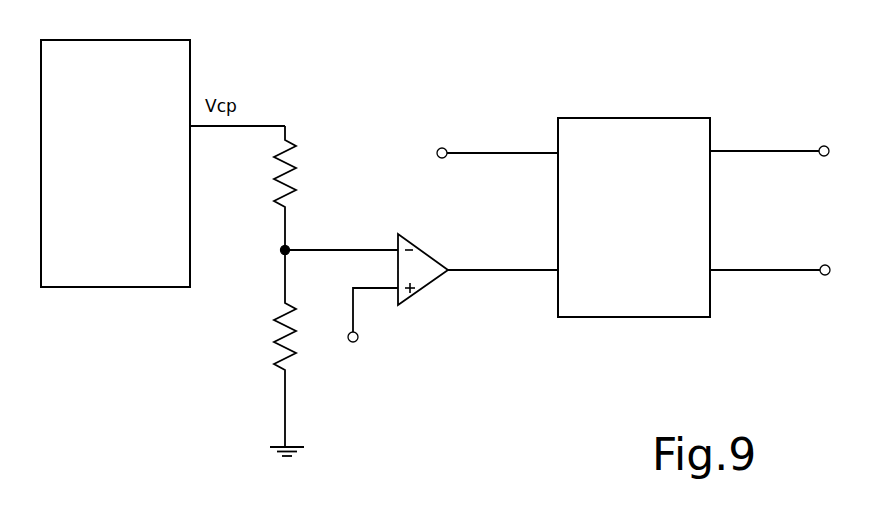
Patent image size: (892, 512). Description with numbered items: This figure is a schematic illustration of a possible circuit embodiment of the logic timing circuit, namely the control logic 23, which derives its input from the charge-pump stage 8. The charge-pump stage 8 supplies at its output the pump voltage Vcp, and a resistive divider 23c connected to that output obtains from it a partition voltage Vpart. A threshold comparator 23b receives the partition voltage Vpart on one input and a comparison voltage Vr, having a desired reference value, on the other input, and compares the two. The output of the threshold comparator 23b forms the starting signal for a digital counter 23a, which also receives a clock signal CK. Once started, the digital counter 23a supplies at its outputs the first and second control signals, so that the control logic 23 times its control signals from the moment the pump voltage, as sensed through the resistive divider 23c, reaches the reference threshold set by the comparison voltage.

The charge-pump stage 8 is at (100, 270).
The control logic 23 is at (410, 118).
The digital counter 23a is at (617, 136).
The threshold comparator 23b is at (430, 277).
The resistive divider 23c is at (313, 168).